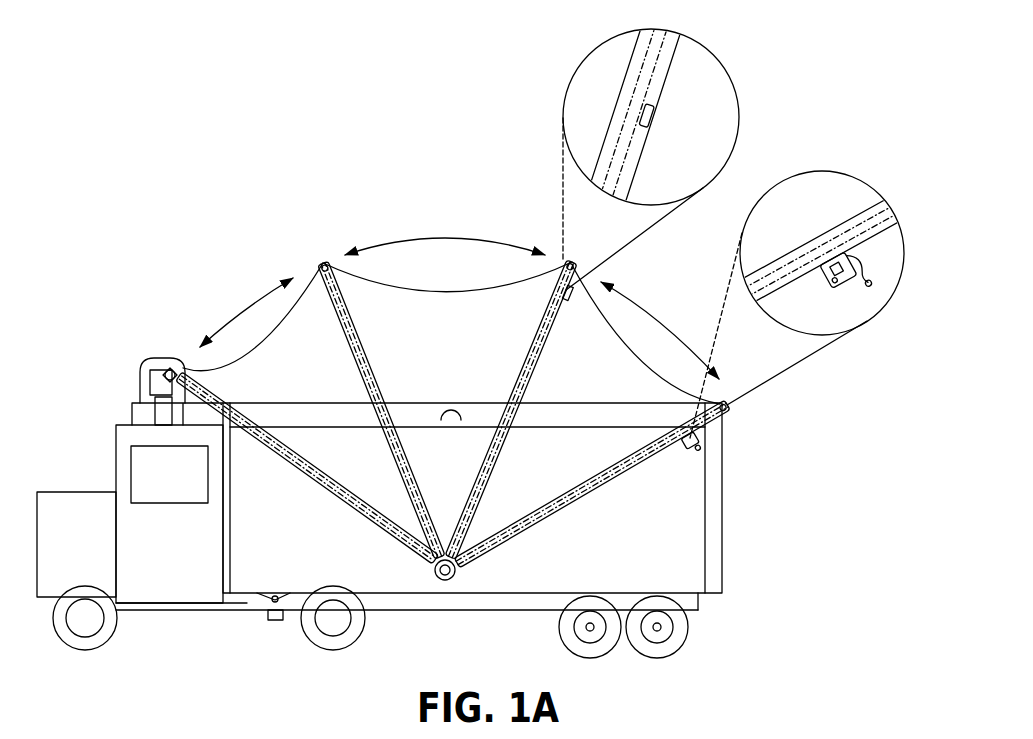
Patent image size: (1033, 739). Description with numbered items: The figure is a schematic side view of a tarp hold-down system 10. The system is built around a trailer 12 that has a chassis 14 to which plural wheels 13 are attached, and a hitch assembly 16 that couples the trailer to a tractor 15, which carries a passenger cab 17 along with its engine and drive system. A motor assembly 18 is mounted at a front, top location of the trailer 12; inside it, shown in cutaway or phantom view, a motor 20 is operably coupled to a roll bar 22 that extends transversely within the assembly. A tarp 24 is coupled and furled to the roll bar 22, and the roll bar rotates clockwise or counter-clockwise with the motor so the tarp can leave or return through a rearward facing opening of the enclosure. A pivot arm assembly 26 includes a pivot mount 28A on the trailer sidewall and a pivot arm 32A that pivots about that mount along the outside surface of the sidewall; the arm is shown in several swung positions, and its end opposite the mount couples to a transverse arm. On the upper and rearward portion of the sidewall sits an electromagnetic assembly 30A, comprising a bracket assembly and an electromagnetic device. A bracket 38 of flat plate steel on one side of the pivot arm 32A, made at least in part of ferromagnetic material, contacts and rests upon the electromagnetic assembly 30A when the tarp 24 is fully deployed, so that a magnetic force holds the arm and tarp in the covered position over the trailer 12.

The tarp hold-down system 10 is at (170, 288).
The trailer 12 is at (722, 570).
The wheels 13 is at (683, 633).
The chassis 14 is at (480, 608).
The tractor 15 is at (88, 493).
The hitch assembly 16 is at (273, 620).
The passenger cab 17 is at (115, 445).
The motor assembly 18 is at (147, 363).
The motor 20 is at (148, 387).
The roll bar 22 is at (168, 370).
The tarp 24 is at (247, 352).
The pivot arm assembly 26 is at (333, 518).
The pivot mount 28A is at (443, 575).
The electromagnetic assembly 30A is at (692, 445).
The pivot arm 32A is at (600, 482).
The bracket 38 is at (566, 303).